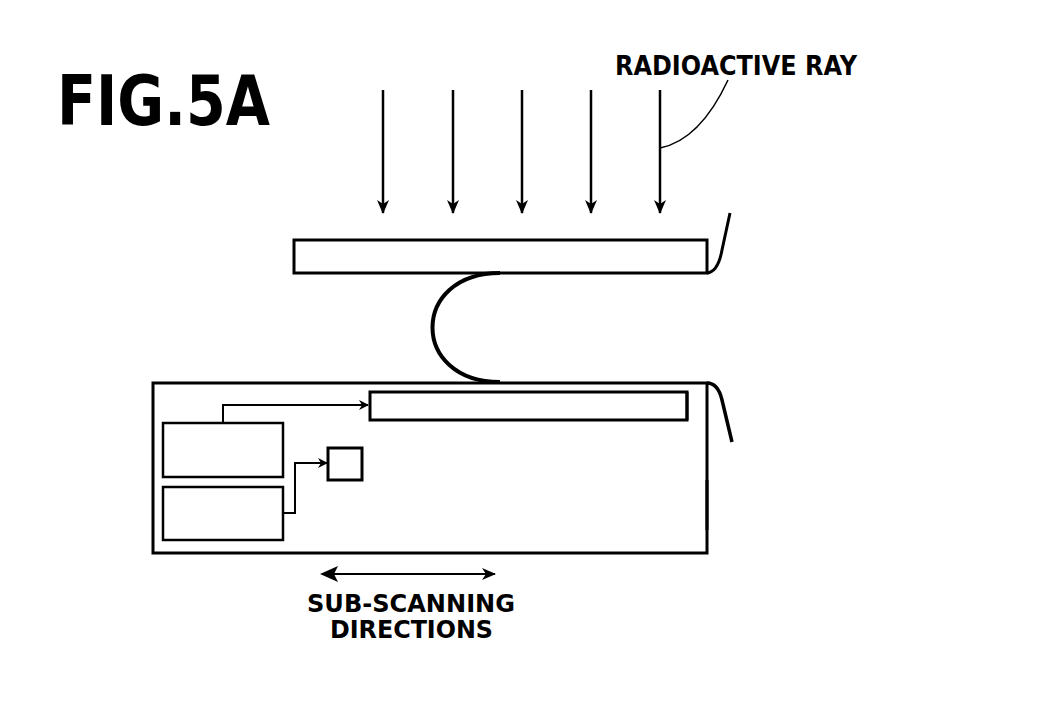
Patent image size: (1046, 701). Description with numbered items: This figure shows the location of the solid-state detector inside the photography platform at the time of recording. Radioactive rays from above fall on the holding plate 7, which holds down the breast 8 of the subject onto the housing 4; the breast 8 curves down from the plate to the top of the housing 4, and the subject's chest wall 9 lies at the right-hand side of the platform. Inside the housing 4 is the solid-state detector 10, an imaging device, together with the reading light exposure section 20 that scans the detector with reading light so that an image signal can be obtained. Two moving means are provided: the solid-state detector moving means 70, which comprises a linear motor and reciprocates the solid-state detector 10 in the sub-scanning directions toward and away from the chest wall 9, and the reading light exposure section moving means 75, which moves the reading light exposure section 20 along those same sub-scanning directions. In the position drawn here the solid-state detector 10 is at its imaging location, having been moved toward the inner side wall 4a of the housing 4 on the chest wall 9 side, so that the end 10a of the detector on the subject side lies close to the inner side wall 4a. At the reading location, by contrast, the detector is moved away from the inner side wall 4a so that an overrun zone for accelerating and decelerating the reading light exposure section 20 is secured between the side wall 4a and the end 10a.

The housing 4 is at (210, 383).
The inner side wall 4a is at (707, 490).
The holding plate 7 is at (352, 240).
The breast 8 is at (443, 327).
The chest wall 9 is at (717, 412).
The solid-state detector 10 is at (660, 410).
The end of the solid-state detector 10a is at (687, 405).
The reading light exposure section 20 is at (362, 465).
The solid-state detector moving means 70 is at (163, 450).
The reading light exposure section moving means 75 is at (163, 505).